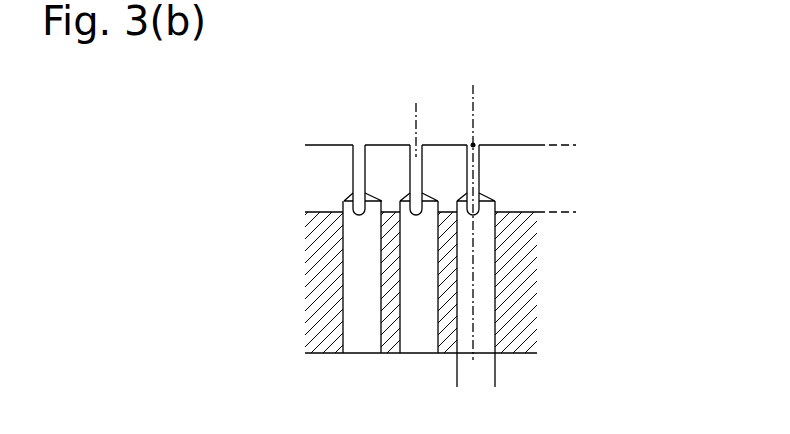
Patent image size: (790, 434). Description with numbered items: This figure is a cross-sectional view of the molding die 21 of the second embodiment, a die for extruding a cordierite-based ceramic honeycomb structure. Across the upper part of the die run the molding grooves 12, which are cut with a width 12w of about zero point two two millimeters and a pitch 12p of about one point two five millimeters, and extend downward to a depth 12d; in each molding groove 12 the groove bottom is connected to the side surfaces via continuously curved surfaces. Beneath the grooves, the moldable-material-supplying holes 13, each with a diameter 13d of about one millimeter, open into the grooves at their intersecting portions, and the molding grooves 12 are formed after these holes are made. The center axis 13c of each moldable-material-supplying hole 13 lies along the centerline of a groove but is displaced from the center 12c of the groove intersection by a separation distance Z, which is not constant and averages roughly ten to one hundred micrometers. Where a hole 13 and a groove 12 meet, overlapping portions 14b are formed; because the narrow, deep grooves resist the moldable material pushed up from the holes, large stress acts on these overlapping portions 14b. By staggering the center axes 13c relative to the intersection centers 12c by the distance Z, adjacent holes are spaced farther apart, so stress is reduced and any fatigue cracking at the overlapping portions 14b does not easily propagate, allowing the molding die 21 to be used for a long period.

The molding die 21 is at (281, 126).
The molding grooves 12 is at (479, 175).
The center of intersection of molding grooves 12c is at (474, 144).
The depth of molding grooves 12d is at (568, 145).
The pitch of molding grooves 12p is at (473, 92).
The width of molding grooves 12w is at (446, 116).
The moldable-material-supplying holes 13 is at (366, 334).
The center axis of moldable-material-supplying hole 13c is at (477, 320).
The diameter of moldable-material-supplying hole 13d is at (495, 382).
The overlapping portions 14b is at (336, 209).
The separation distance Z is at (447, 278).